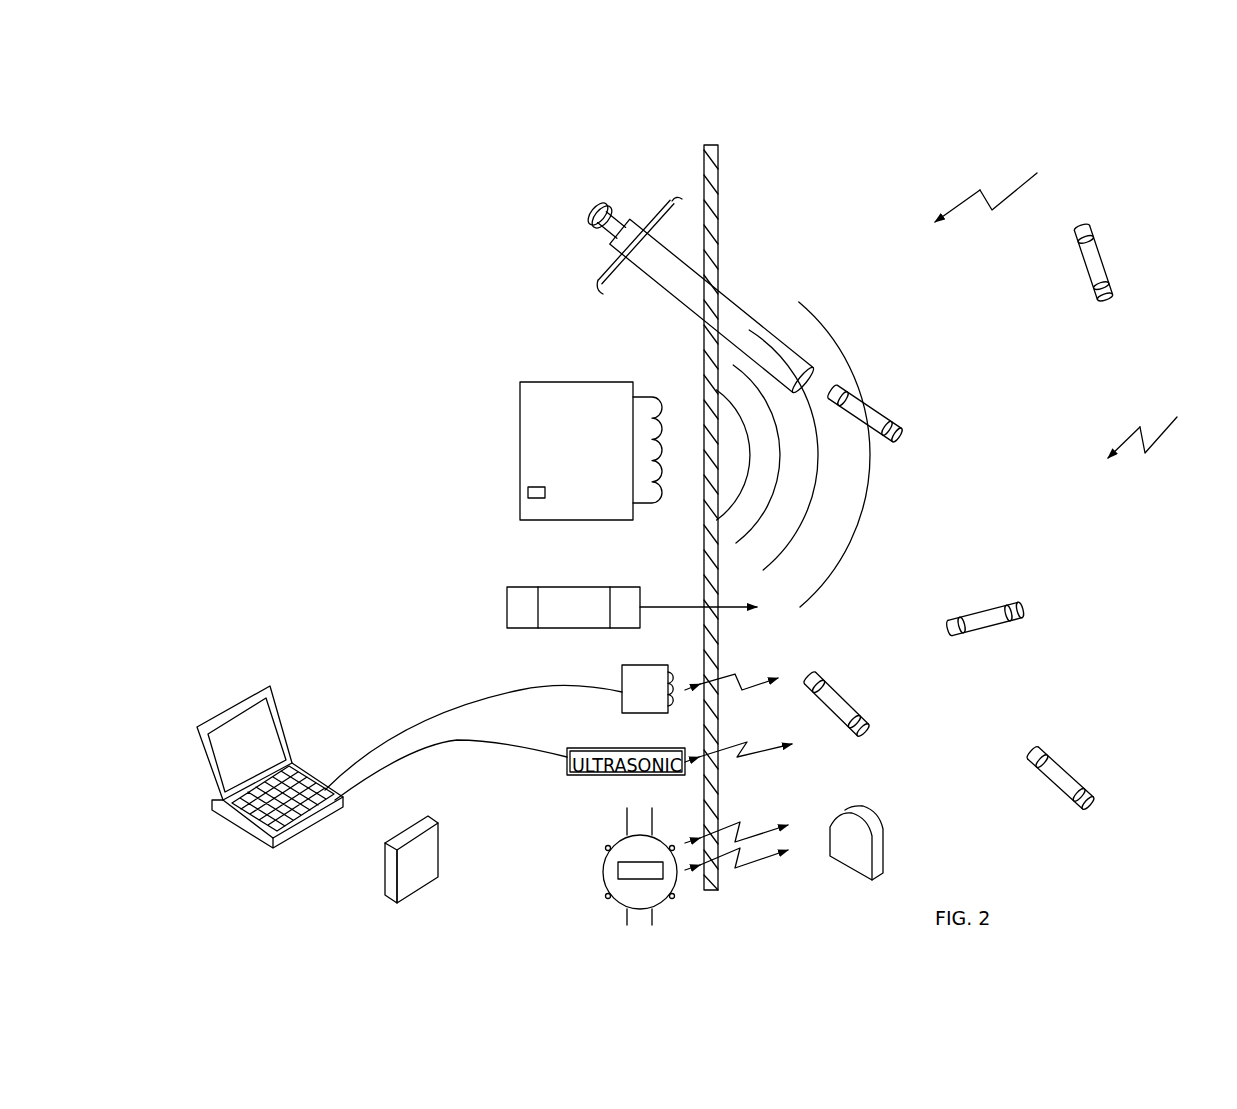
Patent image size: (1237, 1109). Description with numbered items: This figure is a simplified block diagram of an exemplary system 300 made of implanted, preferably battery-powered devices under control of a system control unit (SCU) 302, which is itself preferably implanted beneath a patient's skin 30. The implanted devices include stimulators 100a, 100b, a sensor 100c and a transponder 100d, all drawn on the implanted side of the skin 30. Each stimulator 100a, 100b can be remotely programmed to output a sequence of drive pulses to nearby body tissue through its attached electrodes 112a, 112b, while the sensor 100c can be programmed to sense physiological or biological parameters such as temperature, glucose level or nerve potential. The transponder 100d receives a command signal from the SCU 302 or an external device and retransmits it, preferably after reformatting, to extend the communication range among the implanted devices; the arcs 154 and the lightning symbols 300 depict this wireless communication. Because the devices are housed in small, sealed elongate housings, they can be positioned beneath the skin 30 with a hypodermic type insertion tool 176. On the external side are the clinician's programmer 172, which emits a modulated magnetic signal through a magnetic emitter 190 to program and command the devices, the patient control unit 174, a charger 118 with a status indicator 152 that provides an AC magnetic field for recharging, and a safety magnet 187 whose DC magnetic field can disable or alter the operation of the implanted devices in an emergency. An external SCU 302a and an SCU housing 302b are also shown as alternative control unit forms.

The skin 30 is at (720, 206).
The hypodermic type insertion tool 176 is at (733, 305).
The RF/charging field 154 is at (847, 344).
The system 300 is at (1069, 305).
The stimulator 100a is at (981, 608).
The stimulator 100b is at (1100, 255).
The sensor 100c is at (1072, 772).
The transponder 100d is at (895, 412).
The electrode 112a is at (1086, 222).
The electrode 112b is at (1110, 292).
The charger 118 is at (520, 434).
The charger status indicator 152 is at (545, 491).
The safety magnet 187 is at (507, 612).
The clinician's programmer 172 is at (268, 685).
The system control unit 302 is at (846, 698).
The external SCU 302a is at (428, 818).
The SCU housing 302b is at (878, 830).
The magnetic emitter 190 is at (622, 708).
The patient control unit 174 is at (618, 841).